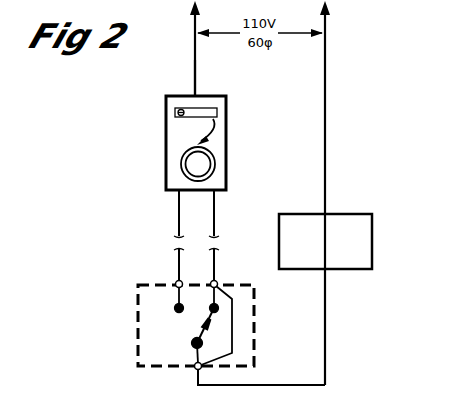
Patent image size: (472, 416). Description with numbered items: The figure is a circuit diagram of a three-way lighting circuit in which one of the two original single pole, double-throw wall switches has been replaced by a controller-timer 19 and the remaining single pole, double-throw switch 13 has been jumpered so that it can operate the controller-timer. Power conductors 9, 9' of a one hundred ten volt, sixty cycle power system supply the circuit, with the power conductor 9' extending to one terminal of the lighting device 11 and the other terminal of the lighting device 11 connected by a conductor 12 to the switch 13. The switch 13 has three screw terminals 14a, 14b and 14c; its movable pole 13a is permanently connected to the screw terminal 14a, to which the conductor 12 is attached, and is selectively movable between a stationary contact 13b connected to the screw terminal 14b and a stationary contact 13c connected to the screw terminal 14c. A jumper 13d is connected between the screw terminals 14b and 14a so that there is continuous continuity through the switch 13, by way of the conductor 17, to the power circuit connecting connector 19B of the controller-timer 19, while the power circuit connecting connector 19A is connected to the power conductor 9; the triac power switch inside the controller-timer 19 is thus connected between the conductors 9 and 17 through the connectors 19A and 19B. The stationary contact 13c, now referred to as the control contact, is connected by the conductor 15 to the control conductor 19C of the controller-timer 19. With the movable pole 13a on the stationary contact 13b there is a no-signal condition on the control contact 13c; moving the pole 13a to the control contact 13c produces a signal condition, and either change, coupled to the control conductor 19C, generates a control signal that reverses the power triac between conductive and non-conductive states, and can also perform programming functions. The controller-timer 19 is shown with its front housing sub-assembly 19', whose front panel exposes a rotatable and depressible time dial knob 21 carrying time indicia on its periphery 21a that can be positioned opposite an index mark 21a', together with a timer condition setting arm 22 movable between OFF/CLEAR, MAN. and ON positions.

The power conductor 9 is at (181, 48).
The power conductor 9' is at (340, 193).
The power circuit connecting connector 19A is at (197, 80).
The controller-timer 19 is at (165, 143).
The timer condition setting arm 22 is at (175, 112).
The time dial knob 21 is at (216, 162).
The periphery 21a is at (231, 171).
The index mark 21a' is at (234, 124).
The front housing sub-assembly 19' is at (238, 134).
The control conductor 19C is at (177, 199).
The power circuit connecting connector 19B is at (215, 196).
The conductor 15 is at (176, 229).
The conductor 17 is at (216, 229).
The single pole, double-throw switch 13 is at (131, 342).
The screw terminal 14c is at (178, 281).
The screw terminal 14b is at (217, 282).
The screw terminal 14a is at (198, 368).
The stationary contact 13c is at (174, 307).
The stationary contact 13b is at (218, 306).
The movable pole 13a is at (204, 328).
The jumper 13d is at (234, 338).
The conductor 12 is at (327, 352).
The lighting device 11 is at (373, 221).